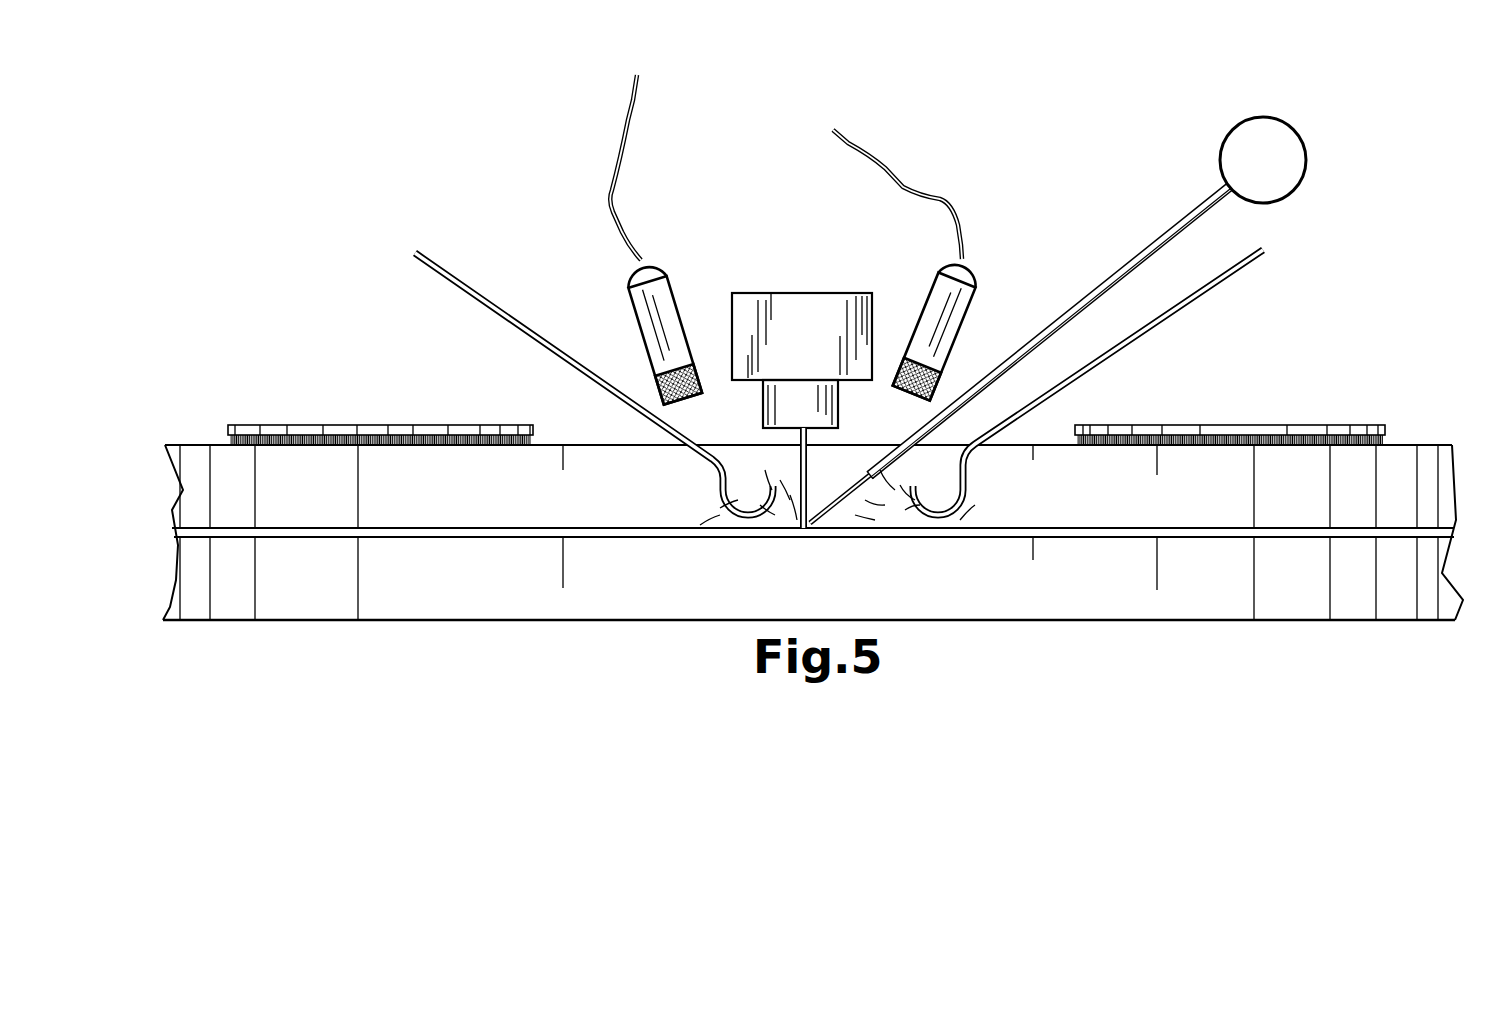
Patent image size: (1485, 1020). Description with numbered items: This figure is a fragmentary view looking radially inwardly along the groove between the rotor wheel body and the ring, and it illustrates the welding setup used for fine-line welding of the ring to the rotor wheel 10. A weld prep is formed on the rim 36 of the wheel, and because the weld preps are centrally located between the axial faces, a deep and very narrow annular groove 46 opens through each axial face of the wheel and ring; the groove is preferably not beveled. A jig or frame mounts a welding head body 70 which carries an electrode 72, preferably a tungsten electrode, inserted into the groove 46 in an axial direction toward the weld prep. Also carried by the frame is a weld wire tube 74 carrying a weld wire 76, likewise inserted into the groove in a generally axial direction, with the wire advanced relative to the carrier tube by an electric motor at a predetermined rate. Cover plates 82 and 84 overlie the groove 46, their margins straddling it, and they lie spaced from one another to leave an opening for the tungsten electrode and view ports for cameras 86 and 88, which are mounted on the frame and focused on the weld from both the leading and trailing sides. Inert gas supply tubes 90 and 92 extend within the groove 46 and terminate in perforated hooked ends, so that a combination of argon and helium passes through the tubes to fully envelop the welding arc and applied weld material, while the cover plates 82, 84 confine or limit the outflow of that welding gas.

The rotor wheel 10 is at (600, 622).
The rim 36 is at (443, 503).
The annular groove 46 is at (468, 582).
The welding head body 70 is at (793, 305).
The electrode 72 is at (803, 527).
The weld wire tube 74 is at (1122, 273).
The weld wire 76 is at (862, 530).
The cover plate 82 is at (1337, 425).
The cover plate 84 is at (332, 424).
The camera 86 is at (925, 290).
The camera 88 is at (620, 282).
The inert gas supply tube 90 is at (1190, 307).
The inert gas supply tube 92 is at (487, 310).